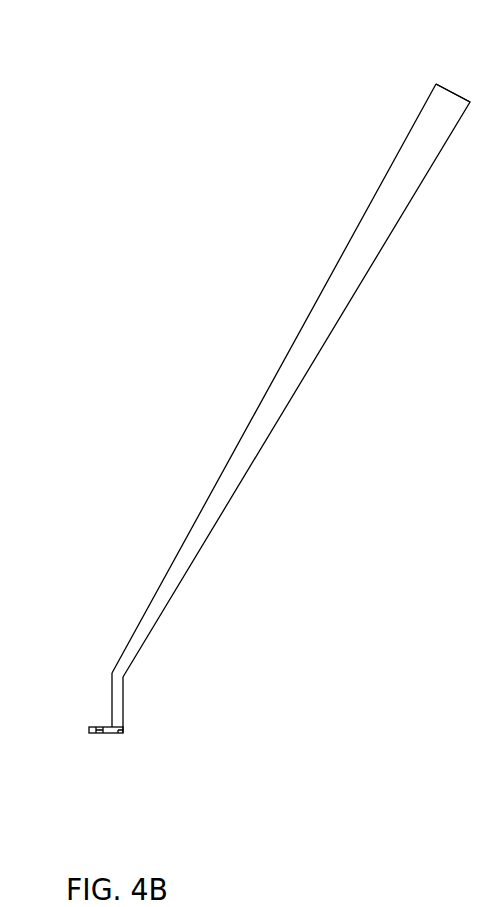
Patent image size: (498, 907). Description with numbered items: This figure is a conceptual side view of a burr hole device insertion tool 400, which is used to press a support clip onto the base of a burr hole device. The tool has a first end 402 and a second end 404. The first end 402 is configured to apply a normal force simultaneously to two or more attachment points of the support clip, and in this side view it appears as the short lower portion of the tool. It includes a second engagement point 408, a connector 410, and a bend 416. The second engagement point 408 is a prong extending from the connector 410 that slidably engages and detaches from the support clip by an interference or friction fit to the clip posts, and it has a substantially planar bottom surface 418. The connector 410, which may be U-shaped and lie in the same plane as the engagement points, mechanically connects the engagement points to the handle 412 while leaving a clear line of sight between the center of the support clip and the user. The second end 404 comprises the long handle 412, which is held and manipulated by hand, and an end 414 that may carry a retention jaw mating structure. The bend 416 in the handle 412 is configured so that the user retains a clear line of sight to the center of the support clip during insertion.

The burr hole device insertion tool 400 is at (225, 122).
The first end 402 is at (240, 690).
The second end 404 is at (152, 346).
The second engagement point 408 is at (95, 727).
The connector 410 is at (123, 730).
The handle 412 is at (352, 257).
The end 414 is at (453, 98).
The bend 416 is at (112, 673).
The bottom surface 418 is at (105, 755).